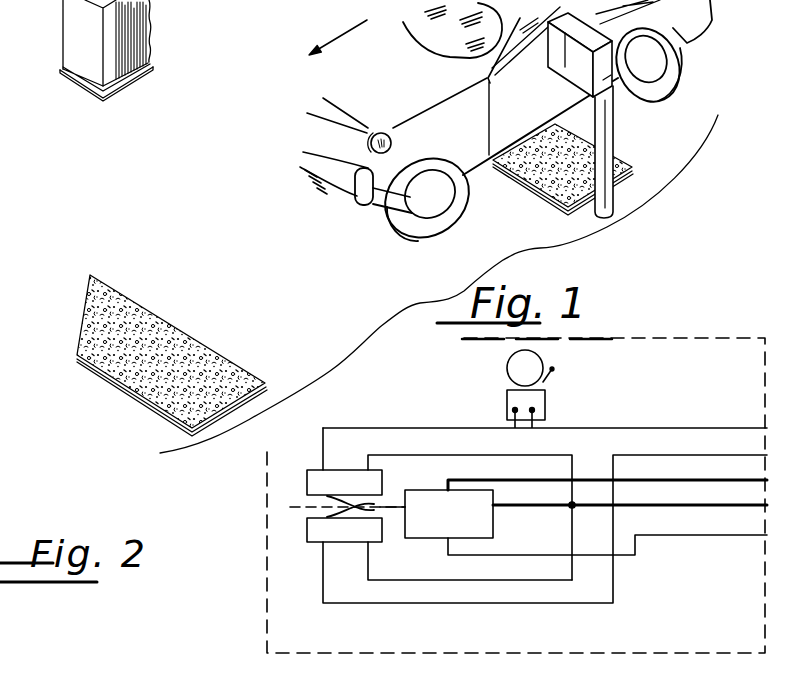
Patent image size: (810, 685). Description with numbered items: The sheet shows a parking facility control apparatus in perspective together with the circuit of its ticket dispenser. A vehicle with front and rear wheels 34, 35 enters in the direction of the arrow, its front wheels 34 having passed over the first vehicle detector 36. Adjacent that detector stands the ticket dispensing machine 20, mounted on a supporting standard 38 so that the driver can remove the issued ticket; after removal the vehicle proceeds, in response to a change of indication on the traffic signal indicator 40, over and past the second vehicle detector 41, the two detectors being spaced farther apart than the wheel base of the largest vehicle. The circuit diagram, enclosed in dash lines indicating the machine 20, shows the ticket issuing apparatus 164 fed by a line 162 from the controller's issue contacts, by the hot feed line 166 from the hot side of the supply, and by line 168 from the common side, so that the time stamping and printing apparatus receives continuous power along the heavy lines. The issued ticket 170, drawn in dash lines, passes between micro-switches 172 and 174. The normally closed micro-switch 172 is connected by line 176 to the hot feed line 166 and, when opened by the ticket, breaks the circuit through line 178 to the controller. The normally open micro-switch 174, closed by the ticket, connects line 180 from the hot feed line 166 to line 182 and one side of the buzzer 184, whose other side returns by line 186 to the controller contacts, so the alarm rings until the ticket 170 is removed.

In FIG. 1, the ticket dispensing machine 20 is at (565, 74).
In FIG. 2, the ticket dispensing machine 20 is at (266, 458).
In FIG. 1, the front wheels 34 is at (462, 190).
In FIG. 1, the rear wheels 35 is at (664, 77).
In FIG. 1, the first vehicle detector 36 is at (613, 171).
In FIG. 1, the supporting standard 38 is at (616, 200).
In FIG. 1, the traffic signal indicator 40 is at (97, 84).
In FIG. 1, the second vehicle detector 41 is at (233, 363).
In FIG. 2, the line 162 is at (712, 535).
In FIG. 2, the ticket issuing apparatus 164 is at (493, 530).
In FIG. 2, the hot feed line 166 is at (520, 506).
In FIG. 2, the line 168 is at (503, 480).
In FIG. 2, the ticket 170 is at (293, 505).
In FIG. 2, the micro-switch 172 is at (307, 530).
In FIG. 2, the micro-switch 174 is at (382, 490).
In FIG. 2, the line 176 is at (380, 580).
In FIG. 2, the line 178 is at (420, 603).
In FIG. 2, the line 180 is at (467, 455).
In FIG. 2, the line 182 is at (383, 428).
In FIG. 2, the buzzer 184 is at (507, 393).
In FIG. 2, the line 186 is at (570, 428).